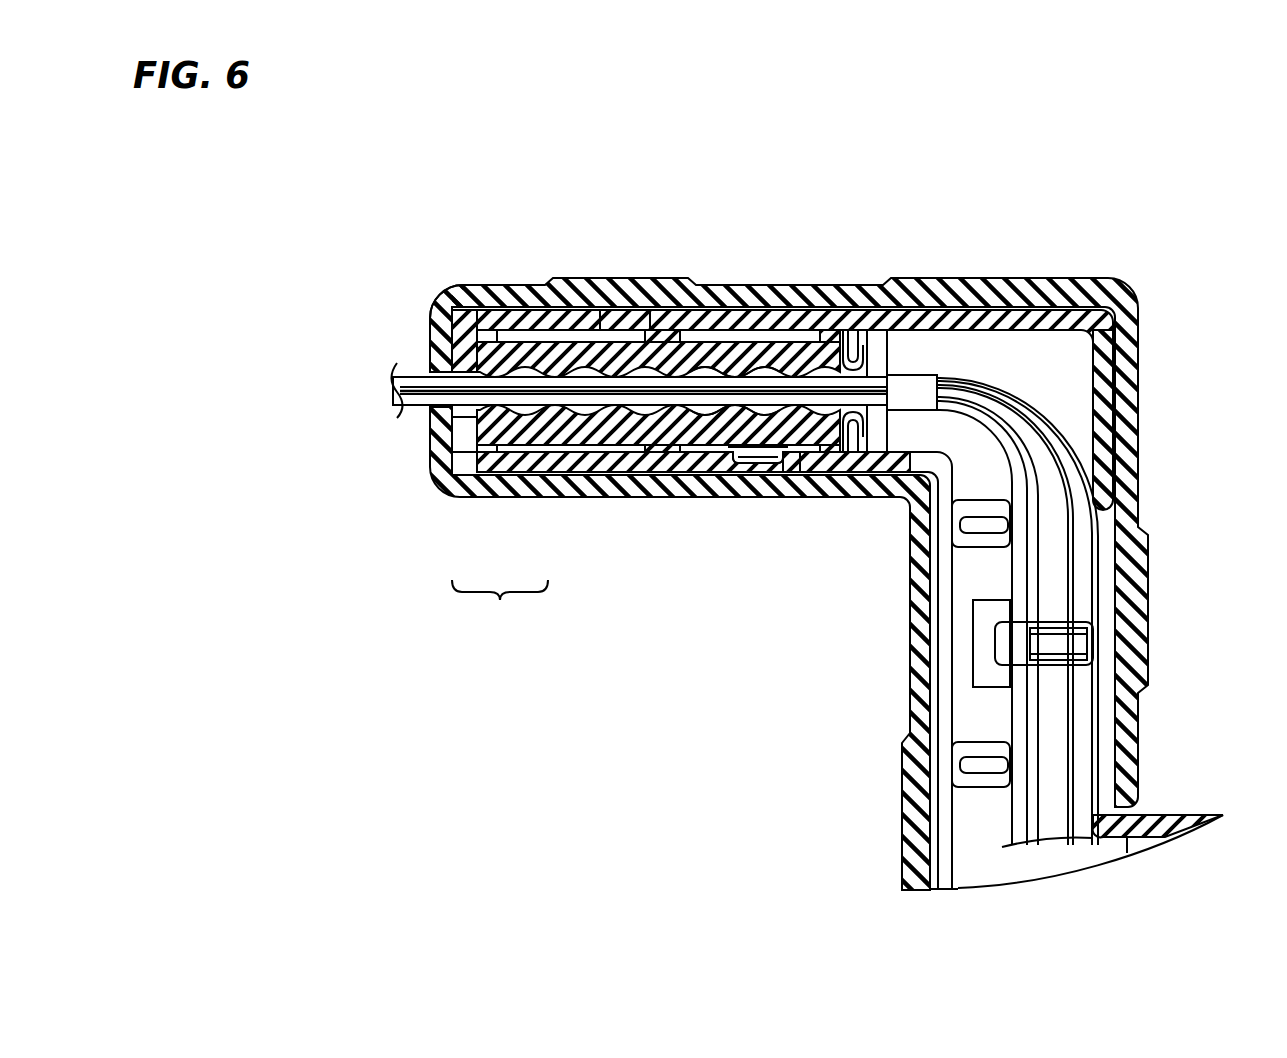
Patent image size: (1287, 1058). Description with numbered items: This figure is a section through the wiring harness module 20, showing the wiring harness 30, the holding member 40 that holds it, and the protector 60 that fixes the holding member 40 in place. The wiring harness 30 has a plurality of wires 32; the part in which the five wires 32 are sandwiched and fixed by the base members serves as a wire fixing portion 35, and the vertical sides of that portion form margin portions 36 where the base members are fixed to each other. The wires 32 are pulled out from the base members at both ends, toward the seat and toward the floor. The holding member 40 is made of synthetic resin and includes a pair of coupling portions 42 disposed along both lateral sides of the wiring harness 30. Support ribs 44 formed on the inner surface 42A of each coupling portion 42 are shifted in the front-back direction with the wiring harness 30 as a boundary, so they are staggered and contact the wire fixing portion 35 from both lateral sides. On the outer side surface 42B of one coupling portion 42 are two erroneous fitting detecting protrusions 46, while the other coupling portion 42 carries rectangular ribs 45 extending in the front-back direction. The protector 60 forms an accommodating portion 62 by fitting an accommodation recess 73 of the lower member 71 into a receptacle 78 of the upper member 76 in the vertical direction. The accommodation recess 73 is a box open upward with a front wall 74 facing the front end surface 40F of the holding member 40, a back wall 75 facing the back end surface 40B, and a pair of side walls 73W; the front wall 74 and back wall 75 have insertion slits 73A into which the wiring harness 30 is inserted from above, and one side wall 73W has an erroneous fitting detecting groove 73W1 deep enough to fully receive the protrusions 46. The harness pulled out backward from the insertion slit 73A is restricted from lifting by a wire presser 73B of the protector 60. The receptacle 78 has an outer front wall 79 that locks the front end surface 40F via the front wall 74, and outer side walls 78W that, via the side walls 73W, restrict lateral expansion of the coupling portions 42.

The wiring harness module 20 is at (699, 232).
The wiring harness 30 is at (917, 358).
The wires 32 is at (1052, 538).
The wire fixing portion 35 is at (929, 382).
The margin portions 36 is at (884, 395).
The holding member 40 is at (650, 458).
The front end surface 40F is at (463, 305).
The back end surface 40B is at (859, 462).
The coupling portions 42 is at (628, 362).
The inner surface 42A is at (735, 418).
The outer side surface 42B is at (590, 356).
The support ribs 44 is at (762, 368).
The rectangular ribs 45 is at (494, 330).
The erroneous fitting detecting protrusions 46 is at (759, 463).
The protector 60 is at (1228, 303).
The accommodating portion 62 is at (500, 609).
The lower member 71 is at (1098, 348).
The accommodation recess 73 is at (518, 462).
The insertion slits 73A is at (468, 370).
The wire presser 73B is at (1075, 645).
The side walls 73W is at (624, 322).
The erroneous fitting detecting groove 73W1 is at (785, 468).
The front wall 74 is at (436, 292).
The back wall 75 is at (850, 352).
The upper member 76 is at (1126, 389).
The receptacle 78 is at (464, 490).
The outer side walls 78W is at (567, 296).
The outer front wall 79 is at (438, 355).